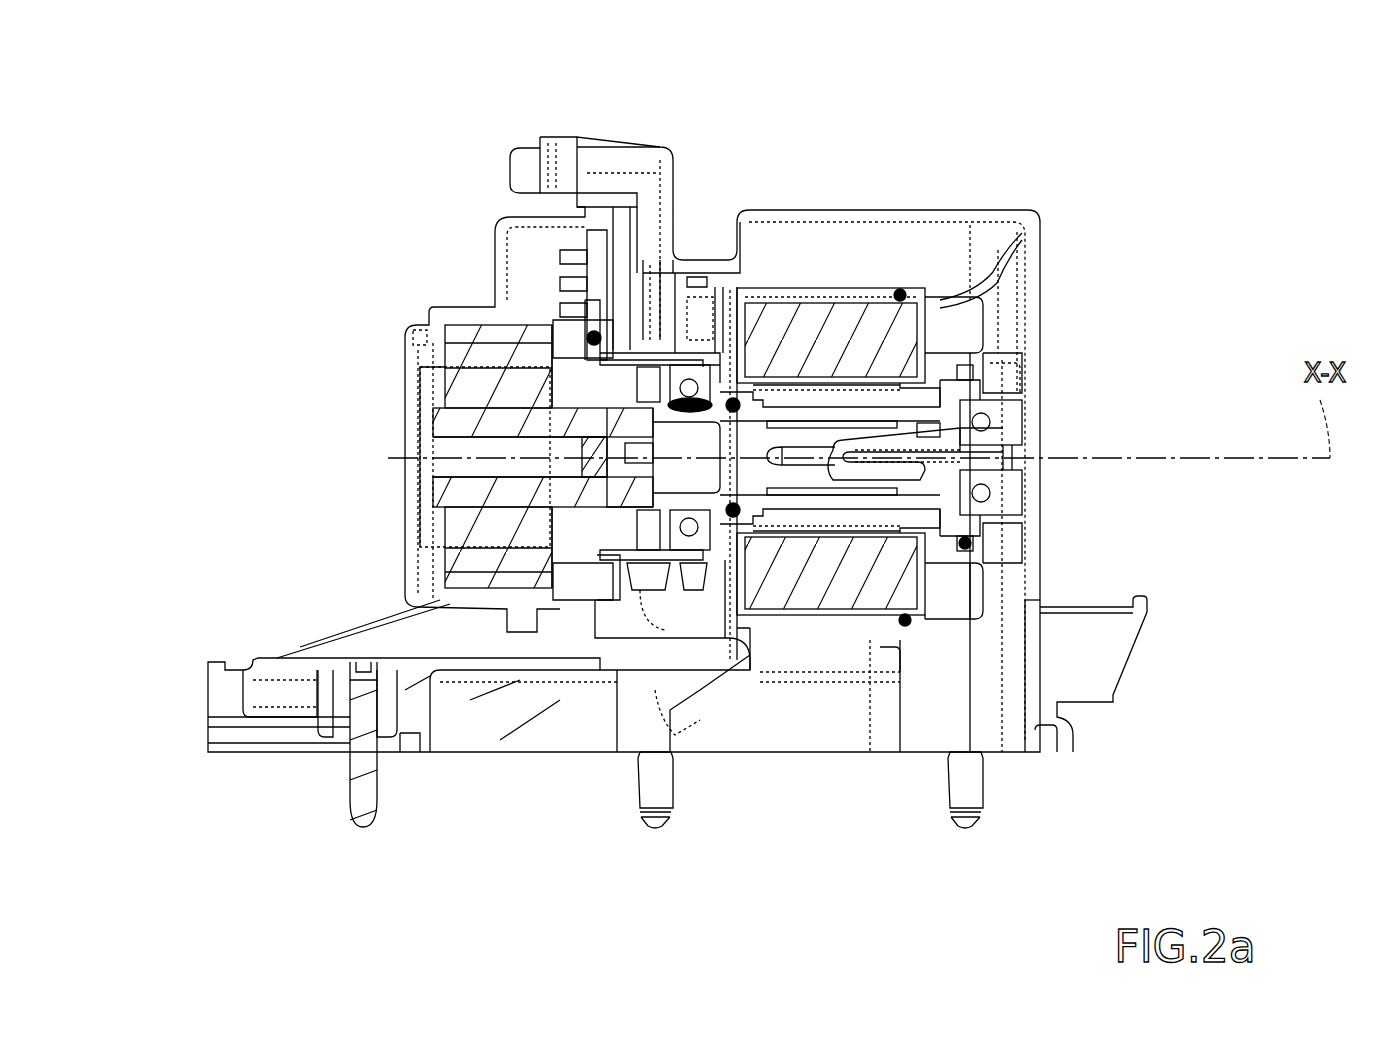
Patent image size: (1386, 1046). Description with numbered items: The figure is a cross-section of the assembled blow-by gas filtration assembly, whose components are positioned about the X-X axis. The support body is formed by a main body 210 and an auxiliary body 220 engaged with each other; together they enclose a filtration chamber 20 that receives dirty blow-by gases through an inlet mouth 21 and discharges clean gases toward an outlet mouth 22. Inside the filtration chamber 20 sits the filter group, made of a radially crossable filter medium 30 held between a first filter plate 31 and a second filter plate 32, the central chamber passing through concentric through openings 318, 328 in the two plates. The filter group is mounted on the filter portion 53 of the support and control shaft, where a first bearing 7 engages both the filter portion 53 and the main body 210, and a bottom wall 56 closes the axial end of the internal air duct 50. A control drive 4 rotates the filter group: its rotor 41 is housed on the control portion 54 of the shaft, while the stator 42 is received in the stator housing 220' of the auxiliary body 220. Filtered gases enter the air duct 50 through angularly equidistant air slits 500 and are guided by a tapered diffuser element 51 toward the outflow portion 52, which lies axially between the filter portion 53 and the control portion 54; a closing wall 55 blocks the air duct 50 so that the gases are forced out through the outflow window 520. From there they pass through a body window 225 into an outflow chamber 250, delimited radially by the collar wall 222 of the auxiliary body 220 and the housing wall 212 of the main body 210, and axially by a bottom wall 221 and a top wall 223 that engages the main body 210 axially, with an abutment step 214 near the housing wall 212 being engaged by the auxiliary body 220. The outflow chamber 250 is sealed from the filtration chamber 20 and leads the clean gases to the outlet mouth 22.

The control drive 4 is at (458, 308).
The first bearing 7 is at (1008, 463).
The filtration chamber 20 is at (972, 240).
The inlet mouth 21 is at (858, 727).
The outlet mouth 22 is at (465, 735).
The filter medium 30 is at (823, 590).
The first filter plate 31 is at (943, 600).
The second filter plate 32 is at (745, 545).
The rotor 41 is at (425, 385).
The stator 42 is at (409, 330).
The air duct 50 is at (703, 433).
The diffuser element 51 is at (990, 498).
The outflow portion 52 is at (590, 600).
The filter portion 53 is at (885, 405).
The control portion 54 is at (440, 416).
The closing wall 55 is at (570, 462).
The bottom wall 56 is at (1005, 412).
The main body 210 is at (1200, 210).
The housing wall 212 is at (745, 285).
The abutment step 214 is at (657, 300).
The auxiliary body 220 is at (548, 348).
The stator housing 220' is at (389, 456).
The bottom wall 221 is at (760, 297).
The collar wall 222 is at (675, 315).
The top wall 223 is at (587, 333).
The body window 225 is at (680, 640).
The outflow chamber 250 is at (707, 273).
The through opening 318 is at (935, 600).
The through opening 328 is at (722, 585).
The air slits 500 is at (968, 545).
The outflow window 520 is at (625, 575).